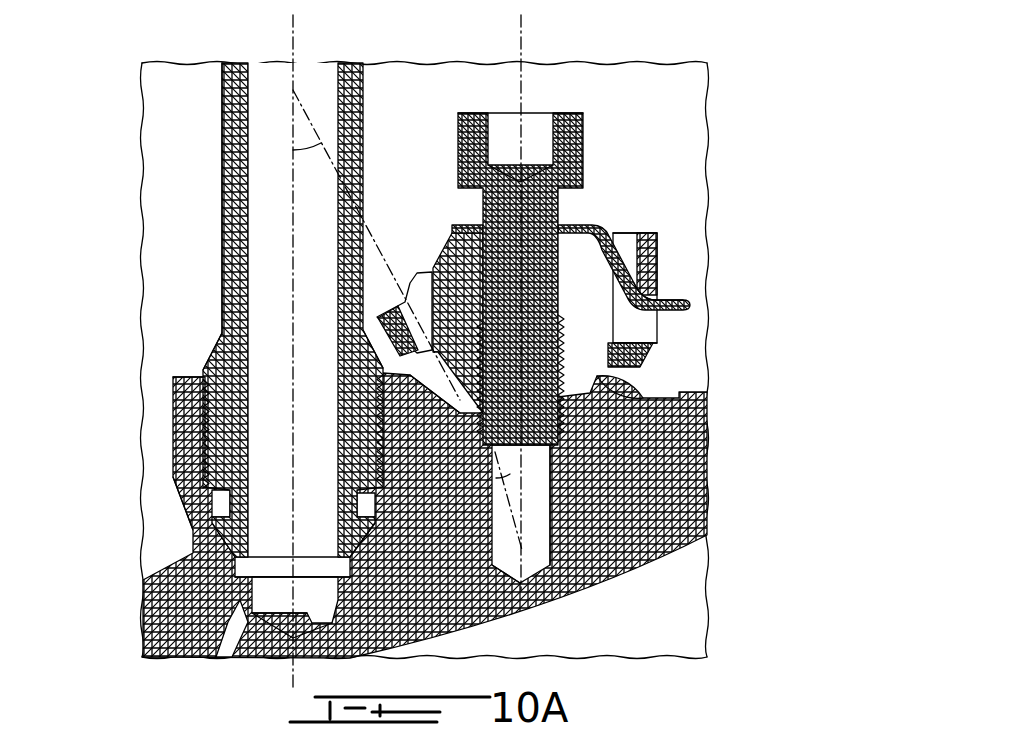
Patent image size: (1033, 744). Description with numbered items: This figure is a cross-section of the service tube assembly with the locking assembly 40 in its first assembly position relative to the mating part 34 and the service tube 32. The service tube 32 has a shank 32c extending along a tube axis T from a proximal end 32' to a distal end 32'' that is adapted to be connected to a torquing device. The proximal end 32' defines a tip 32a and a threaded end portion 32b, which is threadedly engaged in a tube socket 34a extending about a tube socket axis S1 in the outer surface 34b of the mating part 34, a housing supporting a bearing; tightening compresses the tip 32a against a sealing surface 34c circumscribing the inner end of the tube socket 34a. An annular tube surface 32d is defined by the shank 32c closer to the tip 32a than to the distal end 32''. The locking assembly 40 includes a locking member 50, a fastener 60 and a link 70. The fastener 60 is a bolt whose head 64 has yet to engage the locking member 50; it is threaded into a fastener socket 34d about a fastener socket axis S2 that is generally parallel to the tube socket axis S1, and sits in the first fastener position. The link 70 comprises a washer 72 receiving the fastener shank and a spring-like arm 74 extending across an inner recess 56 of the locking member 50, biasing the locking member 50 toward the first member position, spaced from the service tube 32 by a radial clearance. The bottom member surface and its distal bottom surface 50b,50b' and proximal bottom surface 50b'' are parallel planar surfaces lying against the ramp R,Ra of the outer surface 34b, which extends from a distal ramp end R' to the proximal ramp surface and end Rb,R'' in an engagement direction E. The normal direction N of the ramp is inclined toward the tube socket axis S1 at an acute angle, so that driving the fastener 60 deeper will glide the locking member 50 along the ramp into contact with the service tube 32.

The service tube 32 is at (207, 310).
The tip 32a is at (193, 553).
The threaded end portion 32b is at (205, 405).
The shank 32c is at (222, 180).
The annular tube surface 32d is at (215, 350).
The proximal end 32' is at (384, 610).
The distal end 32'' is at (406, 216).
The mating part 34 is at (700, 480).
The tube socket 34a is at (205, 452).
The outer surface 34b is at (175, 372).
The sealing surface 34c is at (235, 625).
The fastener socket 34d is at (548, 505).
The locking assembly 40 is at (730, 118).
The locking member 50 is at (686, 222).
The bottom member surface and distal bottom surface 50b,50b' is at (701, 304).
The proximal bottom surface 50b'' is at (458, 514).
The inner recess 56 is at (657, 259).
The fastener 60 is at (566, 86).
The head 64 is at (583, 135).
The link 70 is at (686, 318).
The washer 72 is at (455, 228).
The spring-like arm 74 is at (633, 232).
The tube axis T is at (293, 28).
The fastener axis F is at (521, 28).
The engagement direction E is at (898, 122).
The normal direction N is at (384, 478).
The distal ramp end R' is at (620, 315).
The ramp and distal ramp surface R,Ra is at (592, 380).
The proximal ramp surface and proximal ramp end Rb,R'' is at (327, 382).
The tube socket axis S1 is at (290, 675).
The fastener socket axis S2 is at (525, 548).